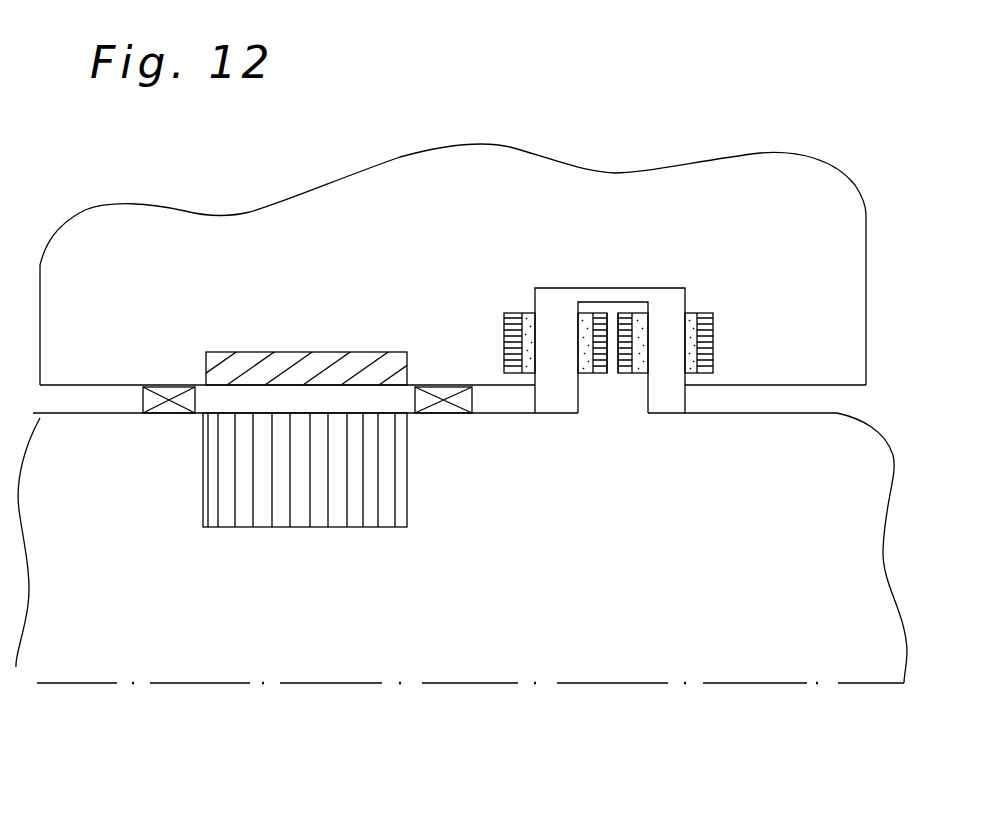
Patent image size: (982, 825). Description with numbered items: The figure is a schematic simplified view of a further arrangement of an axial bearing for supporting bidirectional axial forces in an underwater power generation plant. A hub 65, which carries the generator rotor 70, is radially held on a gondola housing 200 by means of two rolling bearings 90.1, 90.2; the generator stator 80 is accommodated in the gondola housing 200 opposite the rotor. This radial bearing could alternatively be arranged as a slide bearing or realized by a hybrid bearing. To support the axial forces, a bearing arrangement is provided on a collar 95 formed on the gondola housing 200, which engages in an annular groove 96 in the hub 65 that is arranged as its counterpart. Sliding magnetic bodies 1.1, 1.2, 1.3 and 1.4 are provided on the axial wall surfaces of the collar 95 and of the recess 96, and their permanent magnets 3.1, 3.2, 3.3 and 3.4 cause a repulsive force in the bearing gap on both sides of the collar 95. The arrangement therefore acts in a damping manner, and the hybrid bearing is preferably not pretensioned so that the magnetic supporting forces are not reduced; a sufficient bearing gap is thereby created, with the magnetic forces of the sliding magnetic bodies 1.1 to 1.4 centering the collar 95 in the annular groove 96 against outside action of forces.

The hub 65 is at (472, 243).
The generator rotor 70 is at (290, 360).
The generator stator 80 is at (297, 520).
The rolling bearing 90.1 is at (158, 388).
The rolling bearing 90.2 is at (440, 385).
The collar 95 is at (610, 390).
The annular groove 96 is at (658, 288).
The gondola housing 200 is at (108, 415).
The sliding magnetic body 1.1 is at (517, 378).
The sliding magnetic body 1.2 is at (582, 312).
The sliding magnetic body 1.3 is at (622, 305).
The sliding magnetic body 1.4 is at (693, 376).
The permanent magnet 3.1 is at (528, 376).
The permanent magnet 3.2 is at (597, 376).
The permanent magnet 3.3 is at (632, 376).
The permanent magnet 3.4 is at (712, 313).